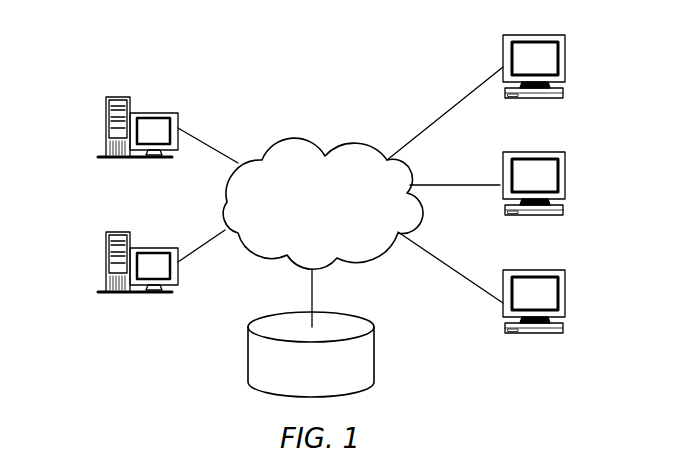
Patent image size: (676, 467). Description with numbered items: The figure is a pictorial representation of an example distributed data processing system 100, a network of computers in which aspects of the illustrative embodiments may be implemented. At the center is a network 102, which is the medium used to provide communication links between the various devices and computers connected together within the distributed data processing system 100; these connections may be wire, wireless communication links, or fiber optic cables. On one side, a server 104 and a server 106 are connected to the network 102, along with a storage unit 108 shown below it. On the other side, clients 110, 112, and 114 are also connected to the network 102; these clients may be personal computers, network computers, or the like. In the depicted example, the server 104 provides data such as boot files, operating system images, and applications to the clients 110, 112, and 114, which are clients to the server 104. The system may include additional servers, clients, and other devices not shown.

The distributed data processing system 100 is at (390, 65).
The network 102 is at (300, 140).
The server 104 is at (106, 128).
The server 106 is at (106, 262).
The storage unit 108 is at (248, 352).
The client 110 is at (565, 65).
The client 112 is at (565, 183).
The client 114 is at (565, 302).